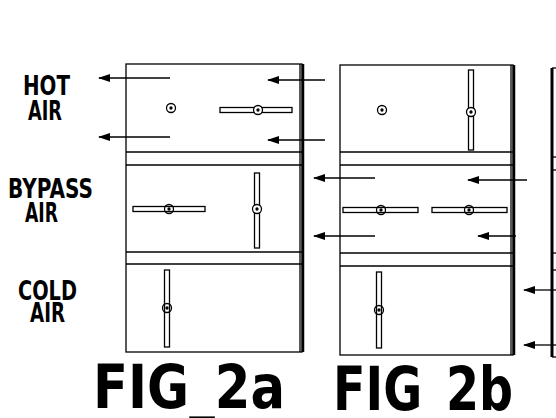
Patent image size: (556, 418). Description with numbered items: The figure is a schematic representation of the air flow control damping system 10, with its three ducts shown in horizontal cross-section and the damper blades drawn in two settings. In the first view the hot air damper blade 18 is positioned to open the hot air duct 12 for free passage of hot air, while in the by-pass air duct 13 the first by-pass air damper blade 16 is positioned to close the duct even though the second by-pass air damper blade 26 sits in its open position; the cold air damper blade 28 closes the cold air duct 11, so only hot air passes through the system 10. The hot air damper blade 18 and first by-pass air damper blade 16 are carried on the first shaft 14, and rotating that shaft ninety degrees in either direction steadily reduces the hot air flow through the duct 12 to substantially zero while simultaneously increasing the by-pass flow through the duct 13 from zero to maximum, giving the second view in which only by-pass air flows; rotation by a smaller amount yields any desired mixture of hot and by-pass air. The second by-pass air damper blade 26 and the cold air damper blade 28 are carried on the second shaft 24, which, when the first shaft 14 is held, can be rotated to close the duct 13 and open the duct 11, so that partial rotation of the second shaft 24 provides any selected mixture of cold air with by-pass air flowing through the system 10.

In FIG. 2A, the air flow control damping system 10 is at (123, 53).
In FIG. 2B, the air flow control damping system 10 is at (389, 57).
In FIG. 2A, the cold air duct 11 is at (303, 347).
In FIG. 2B, the cold air duct 11 is at (511, 338).
In FIG. 2A, the hot air duct 12 is at (216, 64).
In FIG. 2B, the hot air duct 12 is at (461, 65).
In FIG. 2A, the by-pass air duct 13 is at (126, 236).
In FIG. 2B, the by-pass air duct 13 is at (515, 249).
In FIG. 2A, the first shaft 14 is at (258, 105).
In FIG. 2B, the first shaft 14 is at (469, 116).
In FIG. 2A, the first by-pass air damper blade 16 is at (259, 187).
In FIG. 2B, the first by-pass air damper blade 16 is at (487, 213).
In FIG. 2A, the hot air damper blade 18 is at (246, 114).
In FIG. 2B, the hot air damper blade 18 is at (473, 86).
In FIG. 2A, the second shaft 24 is at (171, 103).
In FIG. 2B, the second shaft 24 is at (385, 114).
In FIG. 2A, the second by-pass air damper blade 26 is at (206, 211).
In FIG. 2B, the second by-pass air damper blade 26 is at (370, 207).
In FIG. 2A, the cold air damper blade 28 is at (170, 325).
In FIG. 2B, the cold air damper blade 28 is at (383, 326).